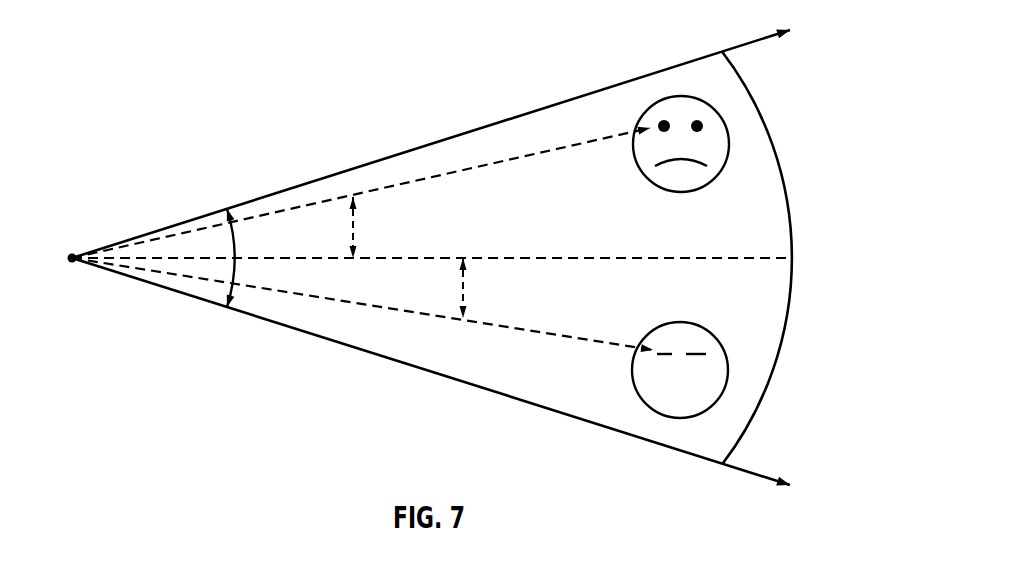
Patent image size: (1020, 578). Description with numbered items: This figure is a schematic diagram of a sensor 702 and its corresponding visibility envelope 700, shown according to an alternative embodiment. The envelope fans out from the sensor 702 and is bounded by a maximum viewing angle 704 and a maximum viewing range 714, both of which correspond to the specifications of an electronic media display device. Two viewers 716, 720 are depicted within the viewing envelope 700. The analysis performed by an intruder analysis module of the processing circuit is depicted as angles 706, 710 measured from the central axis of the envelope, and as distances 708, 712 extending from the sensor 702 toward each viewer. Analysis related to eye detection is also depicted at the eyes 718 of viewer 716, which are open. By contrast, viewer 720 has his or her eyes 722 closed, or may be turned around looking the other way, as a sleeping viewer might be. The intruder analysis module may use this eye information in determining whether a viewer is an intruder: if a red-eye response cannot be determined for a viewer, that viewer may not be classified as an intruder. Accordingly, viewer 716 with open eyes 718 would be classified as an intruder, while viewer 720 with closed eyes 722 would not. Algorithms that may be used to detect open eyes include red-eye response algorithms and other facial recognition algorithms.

The visibility envelope 700 is at (435, 142).
The sensor 702 is at (72, 262).
The maximum viewing angle 704 is at (240, 222).
The angle 706 is at (350, 203).
The distance 708 is at (477, 168).
The angle 710 is at (467, 272).
The distance 712 is at (523, 331).
The maximum viewing range 714 is at (770, 262).
The viewer 716 is at (677, 126).
The eyes 718 is at (697, 120).
The viewer 720 is at (661, 354).
The eyes 722 is at (663, 357).